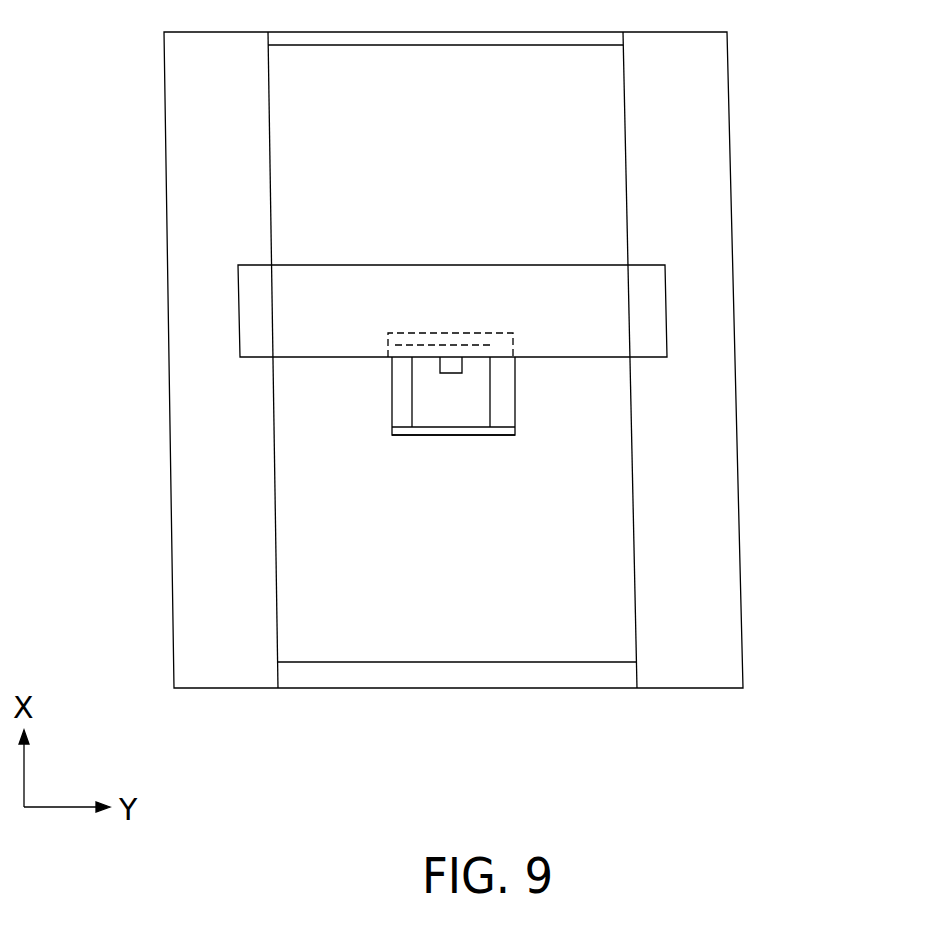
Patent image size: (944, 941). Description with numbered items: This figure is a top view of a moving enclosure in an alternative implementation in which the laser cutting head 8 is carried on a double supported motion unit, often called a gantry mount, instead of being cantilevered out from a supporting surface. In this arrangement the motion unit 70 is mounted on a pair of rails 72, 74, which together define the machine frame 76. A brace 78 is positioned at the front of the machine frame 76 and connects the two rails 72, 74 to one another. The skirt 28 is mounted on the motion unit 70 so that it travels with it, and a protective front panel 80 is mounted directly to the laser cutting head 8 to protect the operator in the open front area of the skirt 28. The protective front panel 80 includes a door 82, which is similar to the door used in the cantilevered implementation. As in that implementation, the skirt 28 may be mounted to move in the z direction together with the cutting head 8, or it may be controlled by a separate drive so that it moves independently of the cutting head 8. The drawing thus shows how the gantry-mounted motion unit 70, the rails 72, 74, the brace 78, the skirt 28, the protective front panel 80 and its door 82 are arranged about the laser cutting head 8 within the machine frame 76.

The machine frame 76 is at (756, 89).
The rail 72 is at (178, 135).
The rail 74 is at (717, 192).
The brace 78 is at (365, 677).
The motion unit 70 is at (648, 305).
The protective front panel 80 is at (550, 393).
The skirt 28 is at (396, 366).
The door 82 is at (438, 437).
The laser cutting head 8 is at (455, 363).